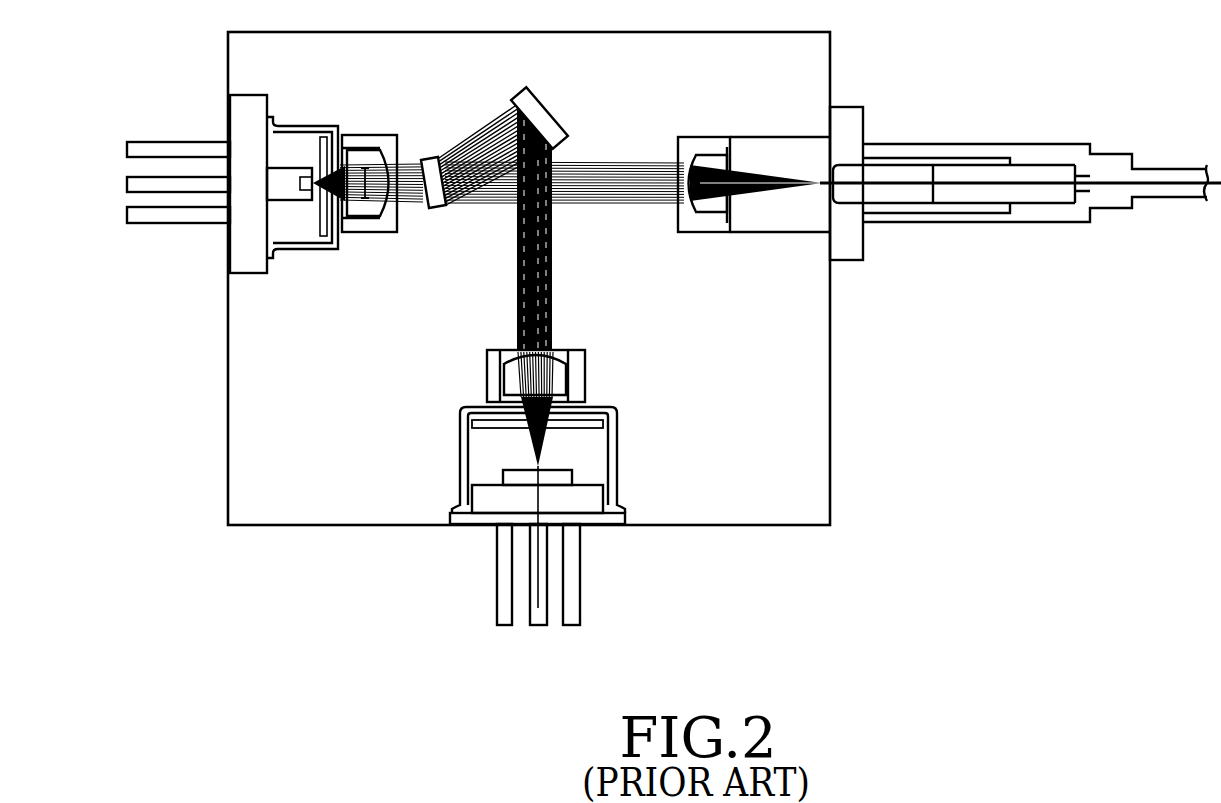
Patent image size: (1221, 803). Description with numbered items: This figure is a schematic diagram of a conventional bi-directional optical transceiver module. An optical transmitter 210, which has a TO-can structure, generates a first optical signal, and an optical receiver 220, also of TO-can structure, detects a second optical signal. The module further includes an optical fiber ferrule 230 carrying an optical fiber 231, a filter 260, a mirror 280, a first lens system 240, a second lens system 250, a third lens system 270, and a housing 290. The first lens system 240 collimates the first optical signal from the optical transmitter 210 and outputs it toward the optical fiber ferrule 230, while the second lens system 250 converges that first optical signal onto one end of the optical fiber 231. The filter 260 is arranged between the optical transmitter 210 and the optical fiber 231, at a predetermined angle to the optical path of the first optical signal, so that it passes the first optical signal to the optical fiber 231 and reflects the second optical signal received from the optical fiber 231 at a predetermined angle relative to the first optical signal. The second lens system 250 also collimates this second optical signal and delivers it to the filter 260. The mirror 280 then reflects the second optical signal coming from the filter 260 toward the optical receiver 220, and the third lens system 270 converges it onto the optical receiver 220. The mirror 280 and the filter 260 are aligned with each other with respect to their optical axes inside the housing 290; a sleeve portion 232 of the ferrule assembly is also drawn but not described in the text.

The optical transmitter 210 is at (192, 279).
The optical receiver 220 is at (460, 549).
The optical fiber ferrule 230 is at (959, 126).
The optical fiber 231 is at (1156, 180).
The sleeve 232 is at (995, 223).
The first lens system 240 is at (368, 228).
The second lens system 250 is at (705, 231).
The filter 260 is at (440, 211).
The third lens system 270 is at (582, 377).
The mirror 280 is at (548, 111).
The housing 290 is at (784, 526).